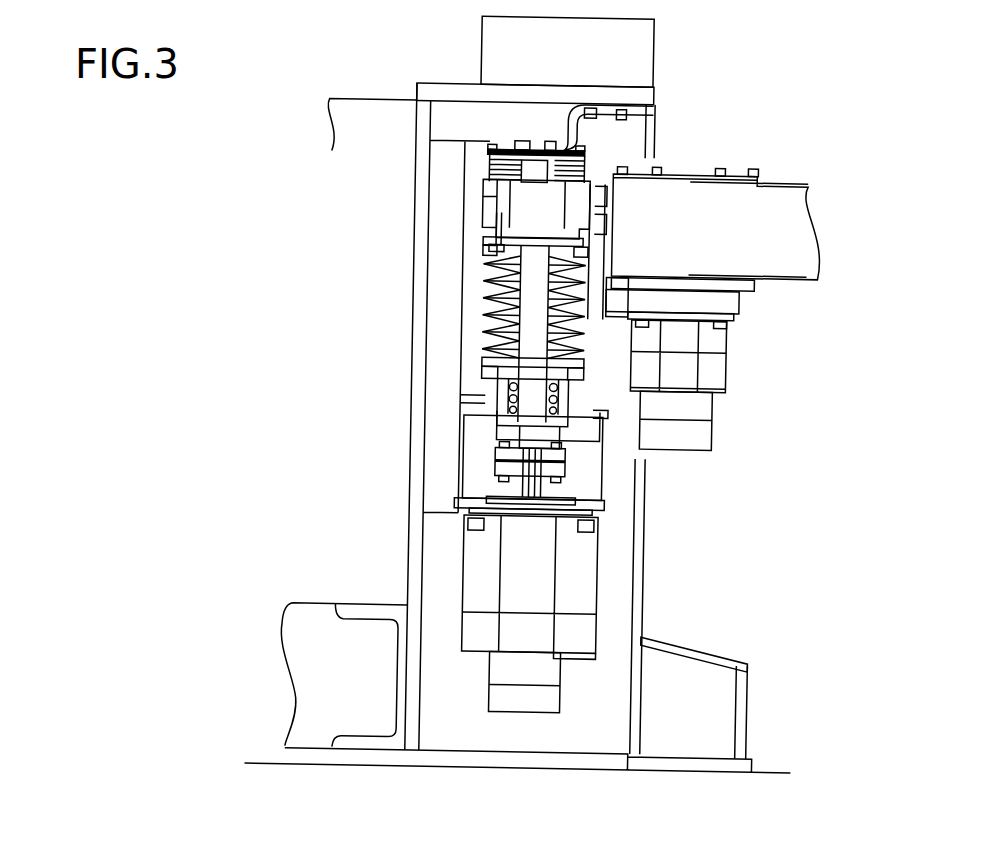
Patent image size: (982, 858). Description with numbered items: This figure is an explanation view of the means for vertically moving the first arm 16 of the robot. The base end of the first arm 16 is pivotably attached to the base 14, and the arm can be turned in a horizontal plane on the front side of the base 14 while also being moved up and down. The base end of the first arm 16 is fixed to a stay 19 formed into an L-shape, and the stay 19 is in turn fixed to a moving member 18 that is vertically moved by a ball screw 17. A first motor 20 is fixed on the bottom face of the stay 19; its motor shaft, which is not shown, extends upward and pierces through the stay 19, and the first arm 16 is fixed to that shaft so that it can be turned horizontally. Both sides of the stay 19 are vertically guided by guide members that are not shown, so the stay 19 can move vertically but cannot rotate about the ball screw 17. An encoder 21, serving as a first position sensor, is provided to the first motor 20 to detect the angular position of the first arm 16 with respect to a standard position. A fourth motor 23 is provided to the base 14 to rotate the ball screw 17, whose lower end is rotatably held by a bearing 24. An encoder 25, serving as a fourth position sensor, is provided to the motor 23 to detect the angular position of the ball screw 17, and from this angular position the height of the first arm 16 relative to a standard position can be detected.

The base 14 is at (422, 470).
The first arm 16 is at (782, 190).
The ball screw 17 is at (539, 275).
The moving member 18 is at (499, 198).
The stay 19 is at (739, 298).
The first motor 20 is at (723, 366).
The encoder (first position sensor) 21 is at (706, 399).
The motor (fourth motor) 23 is at (487, 547).
The bearing 24 is at (508, 415).
The encoder (fourth position sensor) 25 is at (492, 644).